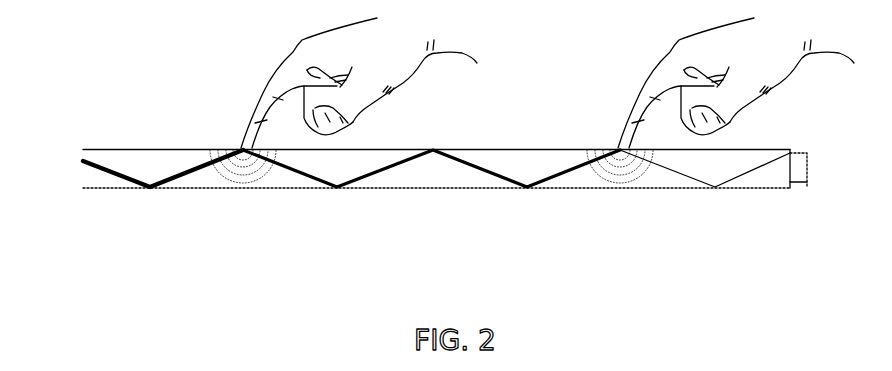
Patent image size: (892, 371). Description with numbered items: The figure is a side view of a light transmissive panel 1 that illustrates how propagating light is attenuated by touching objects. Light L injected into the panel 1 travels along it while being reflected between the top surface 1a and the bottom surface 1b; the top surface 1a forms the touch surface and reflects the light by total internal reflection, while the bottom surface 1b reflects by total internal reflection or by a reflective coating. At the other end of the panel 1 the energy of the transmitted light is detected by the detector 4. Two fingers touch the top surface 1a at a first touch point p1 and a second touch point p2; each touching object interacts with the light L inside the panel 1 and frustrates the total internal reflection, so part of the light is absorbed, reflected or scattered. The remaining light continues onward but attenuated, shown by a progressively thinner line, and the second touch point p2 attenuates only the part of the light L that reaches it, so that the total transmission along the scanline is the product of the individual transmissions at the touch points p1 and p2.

The light transmissive panel 1 is at (455, 167).
The top surface 1a is at (490, 150).
The bottom surface 1b is at (475, 188).
The detector 4 is at (807, 180).
The first touch point p1 is at (241, 148).
The second touch point p2 is at (618, 148).
The light L is at (185, 177).